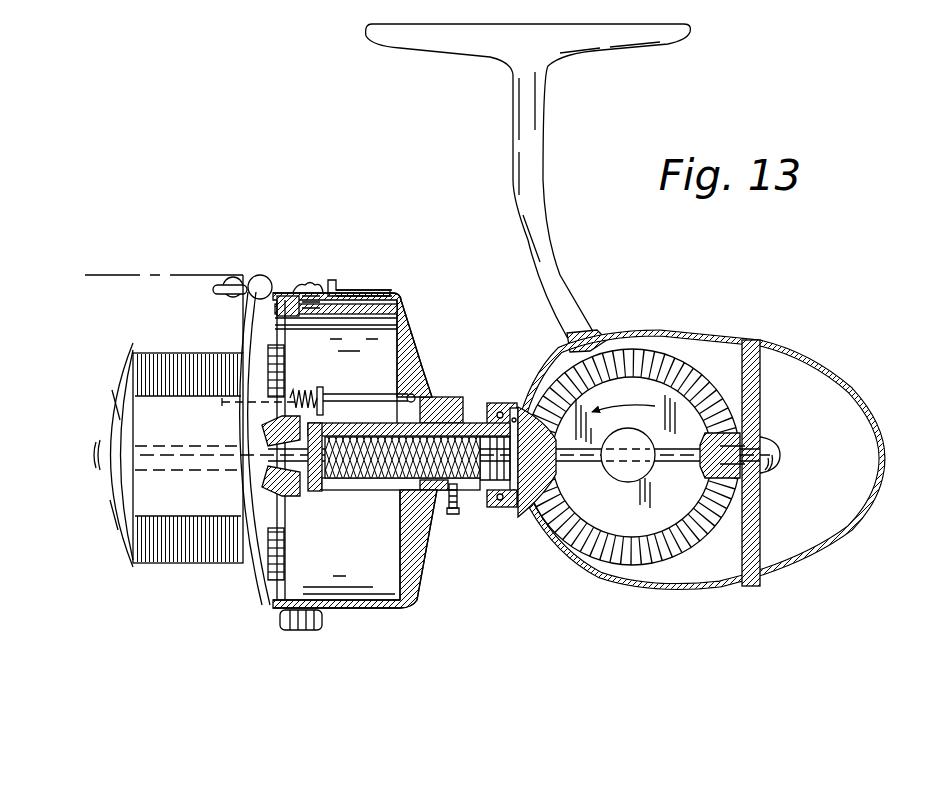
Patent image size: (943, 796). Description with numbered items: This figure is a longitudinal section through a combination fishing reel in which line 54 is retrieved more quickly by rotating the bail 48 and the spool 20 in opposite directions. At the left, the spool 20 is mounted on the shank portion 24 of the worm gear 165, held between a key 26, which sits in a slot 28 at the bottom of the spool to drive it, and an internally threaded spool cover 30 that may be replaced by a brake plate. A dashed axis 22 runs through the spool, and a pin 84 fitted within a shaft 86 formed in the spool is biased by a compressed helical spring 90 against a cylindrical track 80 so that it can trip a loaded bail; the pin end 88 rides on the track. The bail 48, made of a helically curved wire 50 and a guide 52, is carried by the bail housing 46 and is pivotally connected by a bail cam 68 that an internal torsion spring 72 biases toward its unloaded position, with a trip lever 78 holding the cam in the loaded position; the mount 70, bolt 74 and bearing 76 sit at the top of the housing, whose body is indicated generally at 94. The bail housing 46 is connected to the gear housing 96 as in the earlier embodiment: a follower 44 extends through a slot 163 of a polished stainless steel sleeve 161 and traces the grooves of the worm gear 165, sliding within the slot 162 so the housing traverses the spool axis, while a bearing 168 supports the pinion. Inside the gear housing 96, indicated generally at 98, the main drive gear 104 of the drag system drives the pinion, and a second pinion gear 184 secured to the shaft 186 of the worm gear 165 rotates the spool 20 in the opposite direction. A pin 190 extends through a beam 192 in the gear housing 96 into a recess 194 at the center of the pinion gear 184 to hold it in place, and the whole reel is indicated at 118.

The spool 20 is at (186, 566).
The spool shaft 22 is at (175, 472).
The shank portion 24 is at (170, 446).
The key 26 is at (288, 480).
The slot 28 is at (284, 498).
The spool cover 30 is at (128, 348).
The follower 44 is at (457, 512).
The bail housing 46 is at (430, 556).
The bail 48 is at (286, 630).
The helically curved wire 50 is at (258, 612).
The guide 52 is at (212, 298).
The line 54 is at (184, 273).
The bail cam 68 is at (352, 292).
The cam 70 is at (302, 283).
The internal torsion spring 72 is at (332, 282).
The bolt 74 is at (283, 287).
The bail housing 76 is at (318, 305).
The trip lever 78 is at (397, 297).
The cylindrical track 80 is at (404, 521).
The pin 84 is at (346, 394).
The shaft 86 is at (222, 406).
The pin end 88 is at (416, 396).
The compressed helical spring 90 is at (303, 392).
The housing body 94 is at (426, 606).
The gear housing 96 is at (792, 548).
The gear housing 98 is at (751, 583).
The main drive gear 104 is at (712, 395).
The reel 118 is at (170, 642).
The sleeve 161 is at (500, 403).
The sleeve 162 is at (375, 484).
The slot 163 is at (472, 405).
The worm gear 165 is at (448, 420).
The bearing 168 is at (507, 500).
The second pinion gear 184 is at (742, 450).
The shaft 186 is at (586, 464).
The pin 190 is at (778, 440).
The beam 192 is at (762, 516).
The recess 194 is at (708, 474).